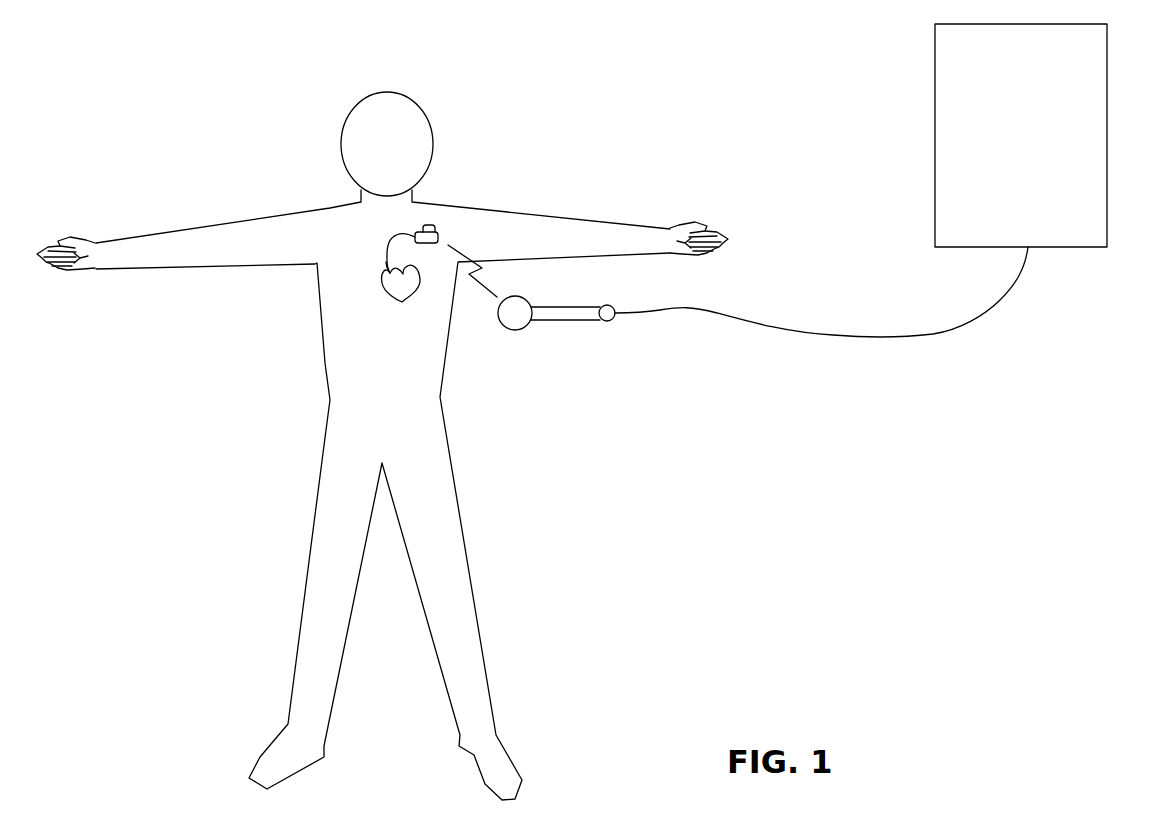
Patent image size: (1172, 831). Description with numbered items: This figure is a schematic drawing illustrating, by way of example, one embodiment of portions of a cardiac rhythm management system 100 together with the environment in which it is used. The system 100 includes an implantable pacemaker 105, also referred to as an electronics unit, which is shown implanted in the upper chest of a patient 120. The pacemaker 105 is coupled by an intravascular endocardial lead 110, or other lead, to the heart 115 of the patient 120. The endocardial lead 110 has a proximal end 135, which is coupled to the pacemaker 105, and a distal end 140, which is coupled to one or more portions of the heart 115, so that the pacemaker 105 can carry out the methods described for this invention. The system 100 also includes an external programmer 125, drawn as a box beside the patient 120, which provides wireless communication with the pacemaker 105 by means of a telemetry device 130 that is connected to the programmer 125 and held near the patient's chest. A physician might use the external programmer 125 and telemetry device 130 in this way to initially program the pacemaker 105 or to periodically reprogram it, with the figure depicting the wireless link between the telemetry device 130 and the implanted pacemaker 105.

The cardiac rhythm management system 100 is at (872, 515).
The implantable pacemaker 105 is at (441, 234).
The intravascular endocardial lead 110 is at (388, 243).
The heart 115 is at (390, 298).
The patient 120 is at (322, 362).
The external programmer 125 is at (1108, 179).
The telemetry device 130 is at (515, 331).
The proximal end 135 is at (420, 223).
The distal end 140 is at (386, 266).